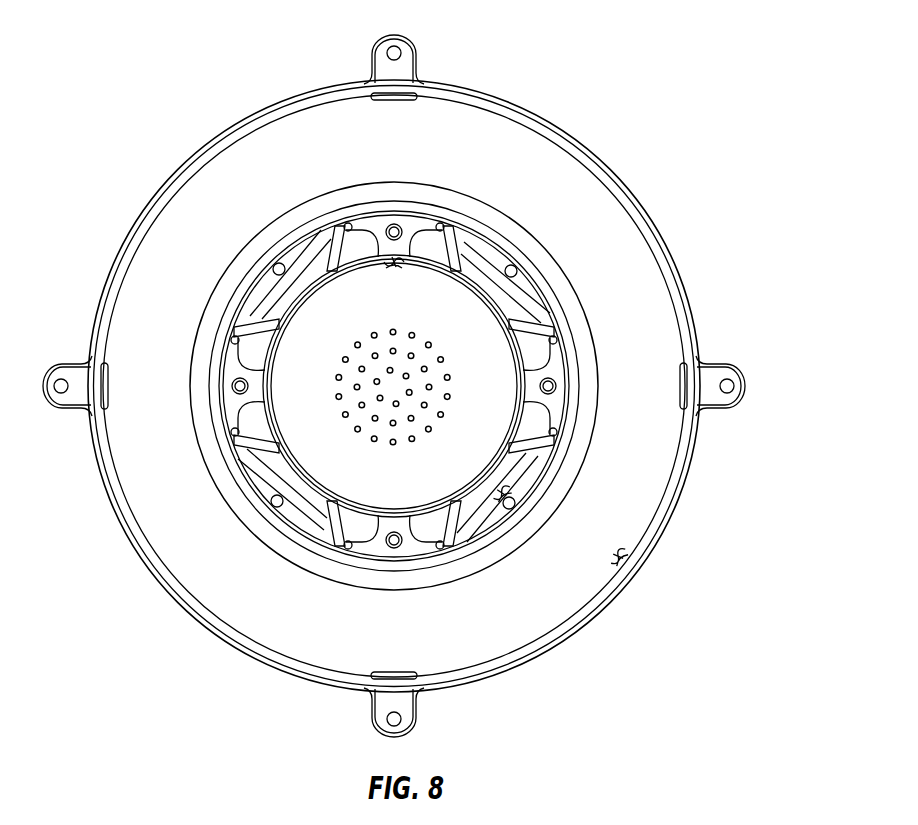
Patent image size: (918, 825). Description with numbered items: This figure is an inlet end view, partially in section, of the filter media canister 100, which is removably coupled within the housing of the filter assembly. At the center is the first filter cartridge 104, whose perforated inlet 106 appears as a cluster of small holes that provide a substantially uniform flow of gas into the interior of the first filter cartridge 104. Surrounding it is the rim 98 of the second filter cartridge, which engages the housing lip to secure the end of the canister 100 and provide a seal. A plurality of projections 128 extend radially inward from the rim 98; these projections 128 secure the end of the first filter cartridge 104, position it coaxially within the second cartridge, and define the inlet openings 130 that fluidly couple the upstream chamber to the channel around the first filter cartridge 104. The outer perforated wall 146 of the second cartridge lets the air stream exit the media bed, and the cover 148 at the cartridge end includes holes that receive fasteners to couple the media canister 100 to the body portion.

The filter media canister 100 is at (670, 74).
The rim 98 is at (205, 380).
The first filter cartridge 104 is at (384, 550).
The perforated inlet 106 is at (415, 483).
The projections 128 is at (252, 320).
The inlet openings 130 is at (300, 270).
The perforated wall 146 is at (558, 648).
The cover 148 is at (726, 370).